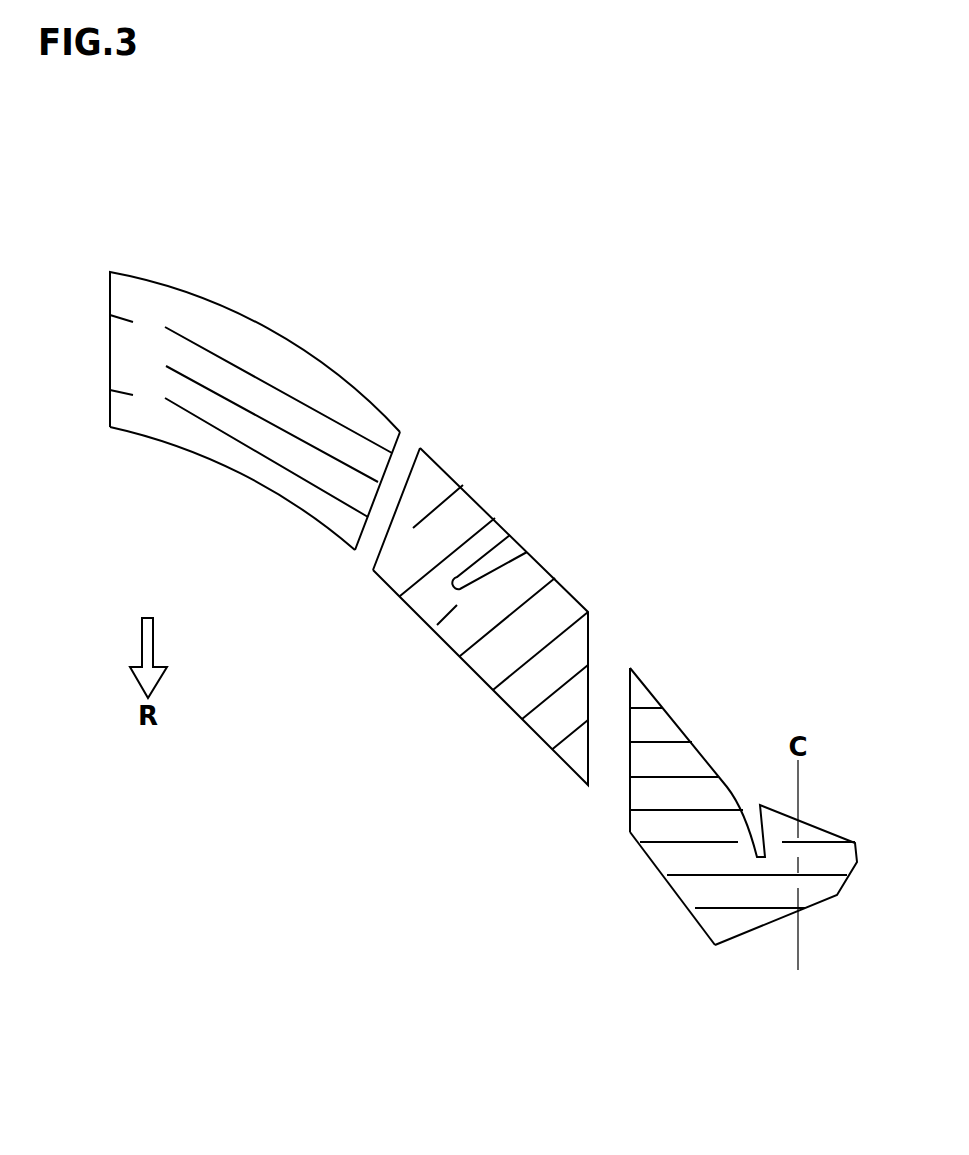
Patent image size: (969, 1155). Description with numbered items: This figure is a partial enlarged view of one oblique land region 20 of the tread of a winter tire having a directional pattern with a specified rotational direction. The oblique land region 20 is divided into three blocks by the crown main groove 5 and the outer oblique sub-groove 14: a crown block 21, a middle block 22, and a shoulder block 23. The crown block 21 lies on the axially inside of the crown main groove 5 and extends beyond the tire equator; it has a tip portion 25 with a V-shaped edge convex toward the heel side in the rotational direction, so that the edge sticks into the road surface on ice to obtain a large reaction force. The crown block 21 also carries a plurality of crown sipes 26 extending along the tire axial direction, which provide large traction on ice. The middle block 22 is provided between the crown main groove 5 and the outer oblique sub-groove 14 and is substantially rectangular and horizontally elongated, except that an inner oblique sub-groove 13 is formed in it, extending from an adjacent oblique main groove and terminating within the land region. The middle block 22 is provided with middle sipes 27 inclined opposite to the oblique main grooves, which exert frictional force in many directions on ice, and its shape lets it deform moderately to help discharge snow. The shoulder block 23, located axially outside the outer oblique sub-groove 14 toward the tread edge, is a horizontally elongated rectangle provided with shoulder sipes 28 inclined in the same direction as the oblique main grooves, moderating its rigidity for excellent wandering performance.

The crown main groove 5 is at (608, 755).
The inner oblique sub-groove 13 is at (495, 562).
The outer oblique sub-groove 14 is at (385, 510).
The oblique land region 20 is at (448, 306).
The crown block 21 is at (705, 798).
The middle block 22 is at (508, 595).
The shoulder block 23 is at (297, 430).
The tip portion 25 is at (697, 935).
The crown sipe 26 is at (747, 873).
The middle sipe 27 is at (537, 652).
The shoulder sipe 28 is at (327, 460).